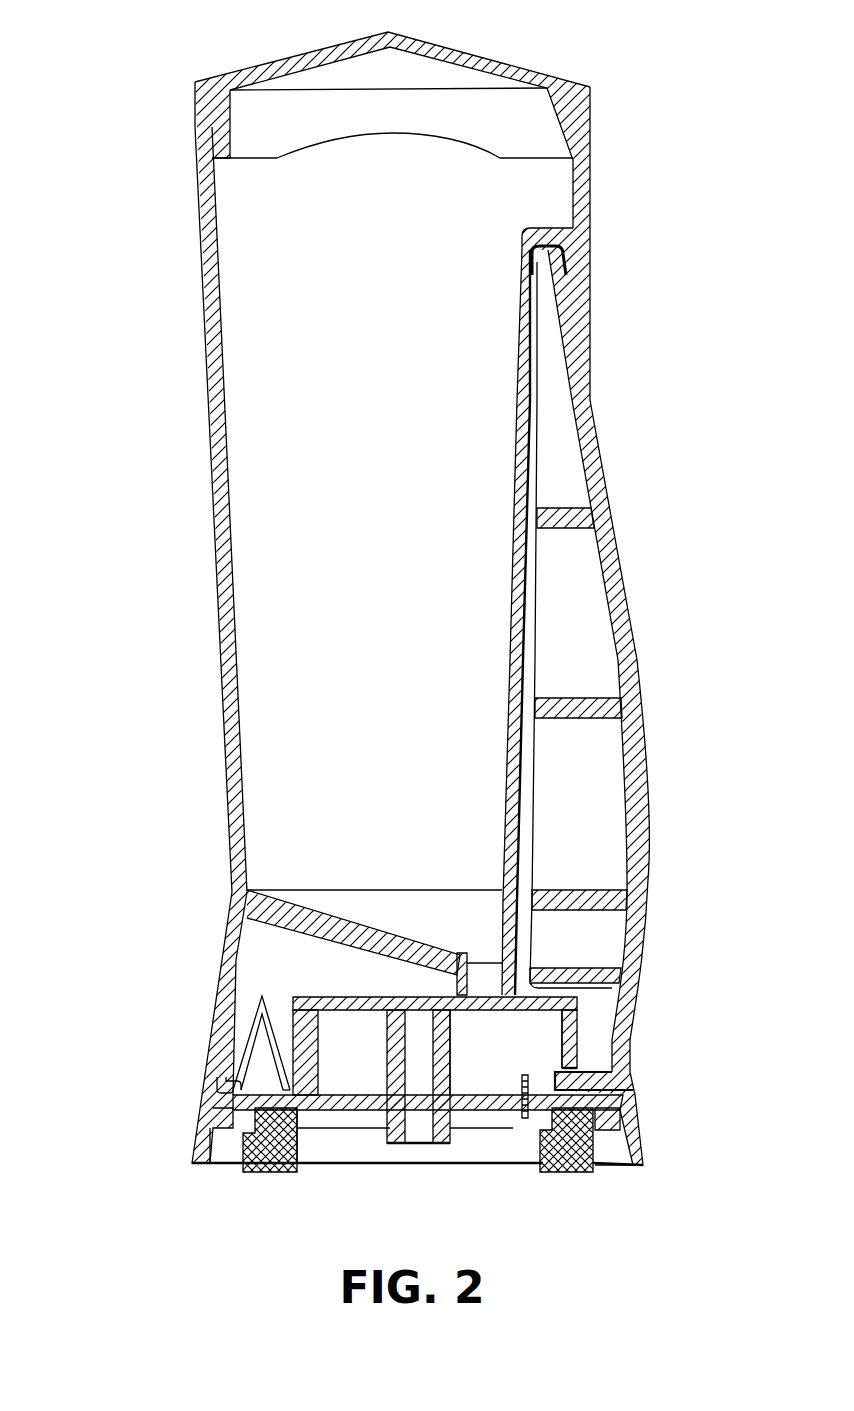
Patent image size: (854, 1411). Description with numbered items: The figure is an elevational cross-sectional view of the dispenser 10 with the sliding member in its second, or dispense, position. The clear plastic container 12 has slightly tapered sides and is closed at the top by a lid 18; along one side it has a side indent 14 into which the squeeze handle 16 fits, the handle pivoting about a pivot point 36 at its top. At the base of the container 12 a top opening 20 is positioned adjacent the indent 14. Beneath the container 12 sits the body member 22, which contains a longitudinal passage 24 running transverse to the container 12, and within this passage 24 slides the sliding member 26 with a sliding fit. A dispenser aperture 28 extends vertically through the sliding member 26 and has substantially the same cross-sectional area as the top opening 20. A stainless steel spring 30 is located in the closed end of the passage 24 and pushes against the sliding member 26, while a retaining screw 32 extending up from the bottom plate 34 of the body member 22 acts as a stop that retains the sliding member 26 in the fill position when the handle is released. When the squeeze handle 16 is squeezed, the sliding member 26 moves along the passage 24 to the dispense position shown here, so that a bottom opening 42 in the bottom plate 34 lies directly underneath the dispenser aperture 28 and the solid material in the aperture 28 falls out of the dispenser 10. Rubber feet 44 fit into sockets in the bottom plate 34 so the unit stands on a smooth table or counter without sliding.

The dispenser 10 is at (142, 103).
The container 12 is at (208, 455).
The side indent 14 is at (577, 297).
The squeeze handle 16 is at (630, 593).
The lid 18 is at (490, 55).
The top opening 20 is at (485, 962).
The body member 22 is at (213, 1022).
The longitudinal passage 24 is at (280, 1005).
The sliding member 26 is at (327, 993).
The dispenser aperture 28 is at (422, 1033).
The spring 30 is at (260, 1033).
The retaining screw 32 is at (527, 1077).
The bottom plate 34 is at (353, 1110).
The pivot point 36 is at (558, 280).
The bottom opening 42 is at (423, 1130).
The rubber feet 44 is at (262, 1173).